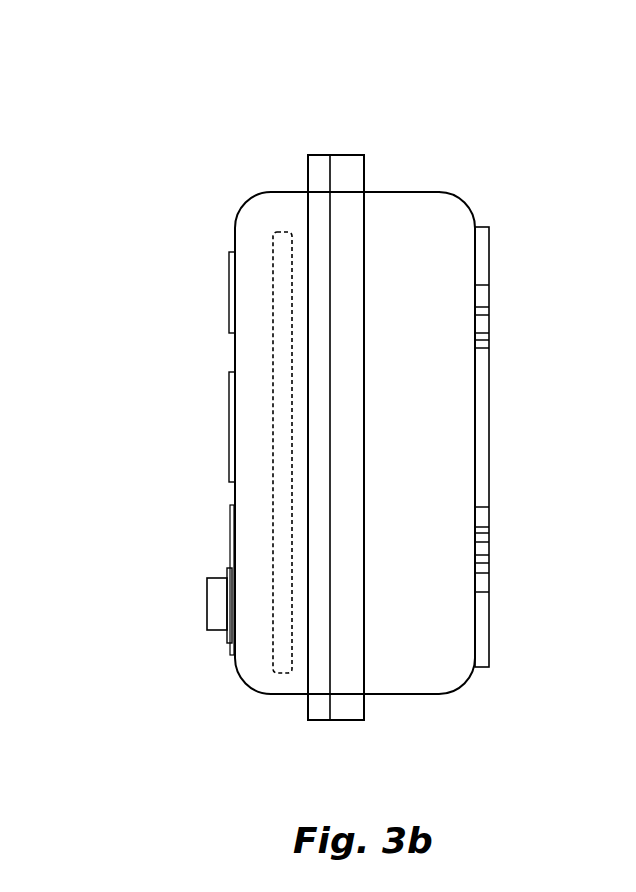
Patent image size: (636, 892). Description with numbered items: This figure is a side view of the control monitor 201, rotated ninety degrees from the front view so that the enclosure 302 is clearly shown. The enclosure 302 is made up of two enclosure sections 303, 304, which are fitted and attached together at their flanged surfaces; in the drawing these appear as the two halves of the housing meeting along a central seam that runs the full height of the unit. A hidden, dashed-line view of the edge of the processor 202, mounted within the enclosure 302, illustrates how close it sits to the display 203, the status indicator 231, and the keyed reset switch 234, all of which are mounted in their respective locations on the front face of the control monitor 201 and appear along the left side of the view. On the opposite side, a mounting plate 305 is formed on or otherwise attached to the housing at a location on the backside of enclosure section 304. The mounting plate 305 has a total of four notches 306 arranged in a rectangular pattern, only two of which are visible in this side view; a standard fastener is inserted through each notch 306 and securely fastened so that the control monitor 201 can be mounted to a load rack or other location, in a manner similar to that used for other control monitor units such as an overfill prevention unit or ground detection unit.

The control monitor 201 is at (360, 118).
The enclosure 302 is at (318, 145).
The enclosure section 303 is at (268, 192).
The enclosure section 304 is at (407, 192).
The mounting plate 305 is at (489, 266).
The notches 306 is at (494, 554).
The processor 202 is at (273, 533).
The display 203 is at (230, 294).
The status indicator 231 is at (229, 437).
The keyed reset switch 234 is at (207, 604).